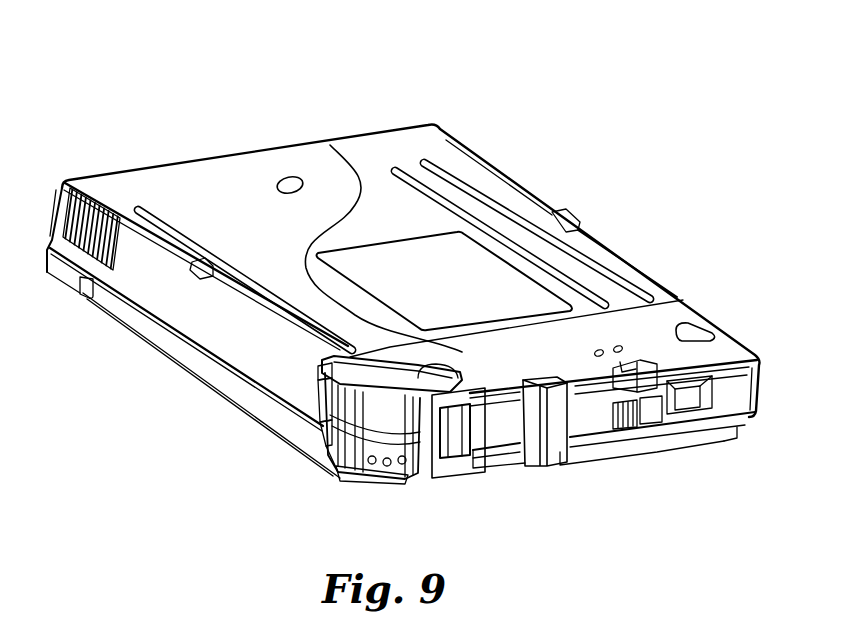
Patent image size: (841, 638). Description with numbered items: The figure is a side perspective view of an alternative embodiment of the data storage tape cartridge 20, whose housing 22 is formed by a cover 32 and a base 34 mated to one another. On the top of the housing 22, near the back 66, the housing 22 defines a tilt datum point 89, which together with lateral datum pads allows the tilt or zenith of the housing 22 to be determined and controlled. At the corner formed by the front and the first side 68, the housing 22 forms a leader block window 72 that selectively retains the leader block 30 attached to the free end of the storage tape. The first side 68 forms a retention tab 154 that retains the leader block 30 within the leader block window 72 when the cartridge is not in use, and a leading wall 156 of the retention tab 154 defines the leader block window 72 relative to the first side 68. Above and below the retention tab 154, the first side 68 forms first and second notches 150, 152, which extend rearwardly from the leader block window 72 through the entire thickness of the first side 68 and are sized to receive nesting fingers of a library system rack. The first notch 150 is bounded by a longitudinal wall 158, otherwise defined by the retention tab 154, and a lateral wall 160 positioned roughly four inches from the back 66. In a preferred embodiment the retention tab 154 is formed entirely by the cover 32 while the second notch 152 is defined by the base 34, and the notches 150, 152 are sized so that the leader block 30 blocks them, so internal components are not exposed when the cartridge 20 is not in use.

The data storage tape cartridge 20 is at (183, 70).
The housing 22 is at (182, 143).
The cover 32 is at (245, 166).
The tilt datum point 89 is at (292, 180).
The back 66 is at (373, 130).
The base 34 is at (68, 276).
The first side 68 is at (126, 300).
The longitudinal wall 158 is at (352, 364).
The leading wall 156 is at (470, 398).
The lateral wall 160 is at (328, 392).
The first notch 150 is at (330, 402).
The retention tab 154 is at (317, 420).
The second notch 152 is at (314, 456).
The leader block window 72 is at (363, 494).
The leader block 30 is at (430, 465).